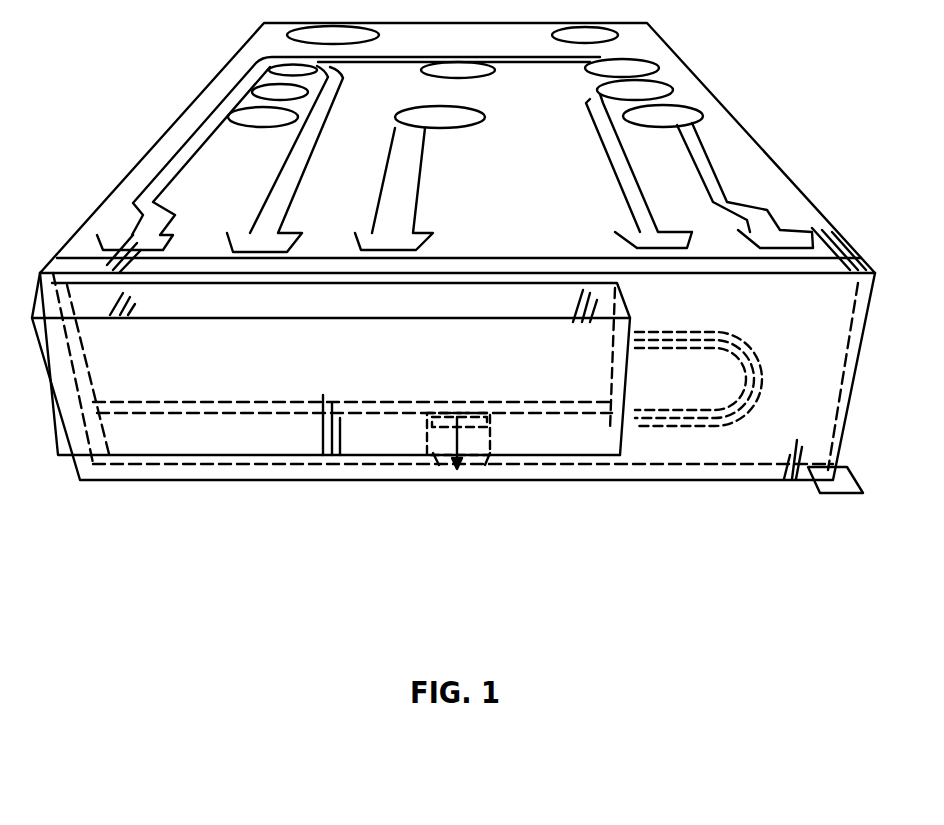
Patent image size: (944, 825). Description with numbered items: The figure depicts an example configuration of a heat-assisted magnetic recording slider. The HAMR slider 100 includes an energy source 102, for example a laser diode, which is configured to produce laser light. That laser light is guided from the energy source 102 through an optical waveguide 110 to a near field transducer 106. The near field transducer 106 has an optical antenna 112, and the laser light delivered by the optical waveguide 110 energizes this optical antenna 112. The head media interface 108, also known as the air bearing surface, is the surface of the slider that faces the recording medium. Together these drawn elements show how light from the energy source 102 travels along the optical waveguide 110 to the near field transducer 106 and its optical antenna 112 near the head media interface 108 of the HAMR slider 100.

The HAMR slider 100 is at (700, 57).
The energy source 102 is at (218, 373).
The near field transducer 106 is at (457, 470).
The head media interface 108 is at (855, 497).
The optical waveguide 110 is at (697, 423).
The optical antenna 112 is at (443, 442).